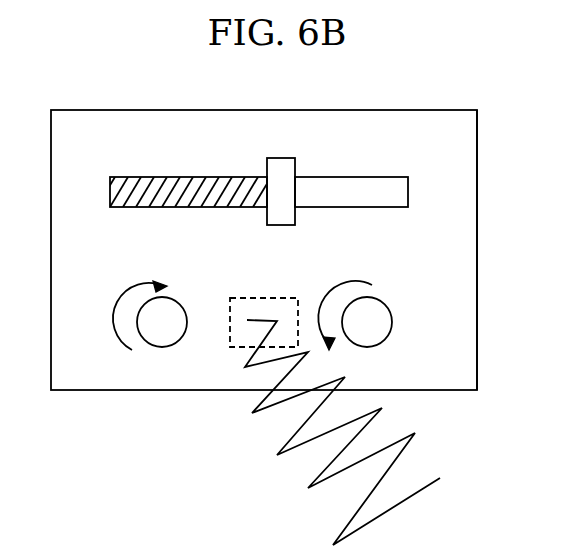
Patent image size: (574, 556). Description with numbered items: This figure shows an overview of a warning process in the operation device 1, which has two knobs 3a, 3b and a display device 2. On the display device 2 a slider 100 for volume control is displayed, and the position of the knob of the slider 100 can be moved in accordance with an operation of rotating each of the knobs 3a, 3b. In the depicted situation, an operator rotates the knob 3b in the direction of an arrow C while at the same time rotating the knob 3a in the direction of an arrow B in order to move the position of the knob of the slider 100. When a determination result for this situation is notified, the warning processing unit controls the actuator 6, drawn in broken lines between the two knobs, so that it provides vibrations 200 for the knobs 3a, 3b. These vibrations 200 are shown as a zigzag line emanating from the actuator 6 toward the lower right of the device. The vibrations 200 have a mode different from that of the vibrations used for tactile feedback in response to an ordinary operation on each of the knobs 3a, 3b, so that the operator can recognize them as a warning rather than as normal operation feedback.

The operation device 1 is at (492, 109).
The display device 2 is at (470, 211).
The slider 100 is at (140, 178).
The knob 3a is at (160, 347).
The knob 3b is at (390, 337).
The actuator 6 is at (238, 347).
The vibrations 200 is at (327, 467).
The arrow B is at (128, 303).
The arrow C is at (372, 283).